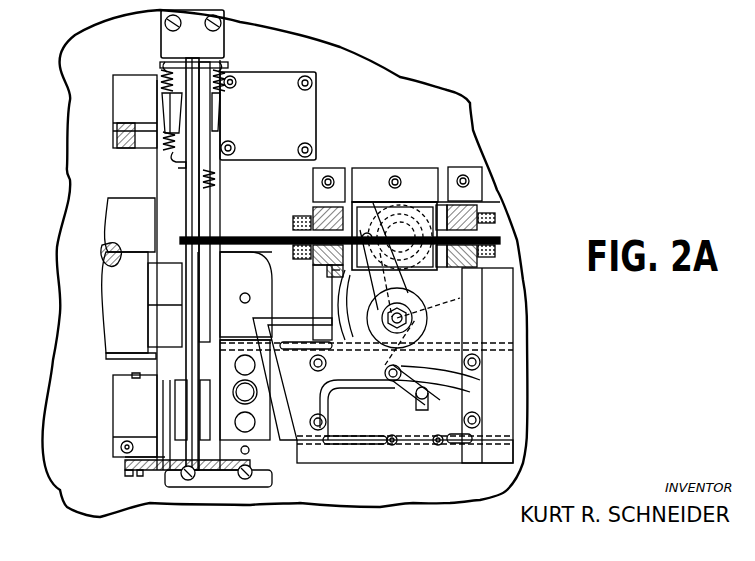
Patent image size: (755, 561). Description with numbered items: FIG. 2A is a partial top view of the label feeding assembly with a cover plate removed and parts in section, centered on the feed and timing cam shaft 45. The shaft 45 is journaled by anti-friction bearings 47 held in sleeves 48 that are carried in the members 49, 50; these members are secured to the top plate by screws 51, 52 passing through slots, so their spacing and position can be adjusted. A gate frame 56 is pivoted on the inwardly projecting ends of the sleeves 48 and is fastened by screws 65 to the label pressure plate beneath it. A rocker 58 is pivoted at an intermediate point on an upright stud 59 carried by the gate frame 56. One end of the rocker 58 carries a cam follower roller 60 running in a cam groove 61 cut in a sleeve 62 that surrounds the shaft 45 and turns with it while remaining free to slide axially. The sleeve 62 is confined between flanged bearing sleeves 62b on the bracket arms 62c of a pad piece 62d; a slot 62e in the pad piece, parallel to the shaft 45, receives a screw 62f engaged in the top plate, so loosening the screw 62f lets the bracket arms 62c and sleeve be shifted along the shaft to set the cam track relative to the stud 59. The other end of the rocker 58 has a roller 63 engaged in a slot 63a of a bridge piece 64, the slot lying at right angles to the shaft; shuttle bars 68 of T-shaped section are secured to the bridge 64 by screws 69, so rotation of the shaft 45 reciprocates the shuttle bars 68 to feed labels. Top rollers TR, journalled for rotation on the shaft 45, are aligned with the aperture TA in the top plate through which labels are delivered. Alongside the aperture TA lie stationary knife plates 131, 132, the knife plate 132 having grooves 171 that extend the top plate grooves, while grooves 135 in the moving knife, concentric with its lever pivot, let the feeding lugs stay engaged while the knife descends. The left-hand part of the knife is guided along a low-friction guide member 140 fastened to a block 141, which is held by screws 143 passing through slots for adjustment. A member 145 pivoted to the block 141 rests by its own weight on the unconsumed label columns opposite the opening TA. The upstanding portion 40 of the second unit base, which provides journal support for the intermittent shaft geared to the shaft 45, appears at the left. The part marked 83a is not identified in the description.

The top rollers TR is at (140, 150).
The upstanding portion 40 is at (117, 310).
The feed and timing cam shaft 45 is at (236, 243).
The anti-friction bearings 47 is at (295, 232).
The sleeves 48 is at (298, 182).
The member 49 is at (325, 180).
The member 50 is at (482, 216).
The screw 51 is at (330, 180).
The screw 52 is at (467, 184).
The gate frame 56 is at (325, 298).
The rocker 58 is at (391, 286).
The stud 59 is at (413, 315).
The cam follower roller 60 is at (375, 230).
The cam groove 61 is at (395, 207).
The sleeve 62 is at (422, 182).
The flanged bearing sleeves 62b is at (539, 290).
The bracket arms 62c is at (326, 189).
The pad piece 62d is at (393, 180).
The slot 62e is at (395, 180).
The screw 62f is at (402, 180).
The roller 63 is at (390, 394).
The slot 63a is at (425, 412).
The bridge piece 64 is at (448, 402).
The screws 65 is at (310, 420).
The shuttle bars 68 is at (282, 355).
The screws 69 is at (448, 348).
The slide 83a is at (182, 440).
The knife plate 131 is at (250, 487).
The knife plate 132 is at (264, 259).
The grooves 135 is at (219, 344).
The guide member 140 is at (160, 470).
The block 141 is at (120, 422).
The screws 143 is at (133, 377).
The member 145 is at (140, 472).
The grooves 171 is at (236, 358).
The aperture TA is at (240, 235).